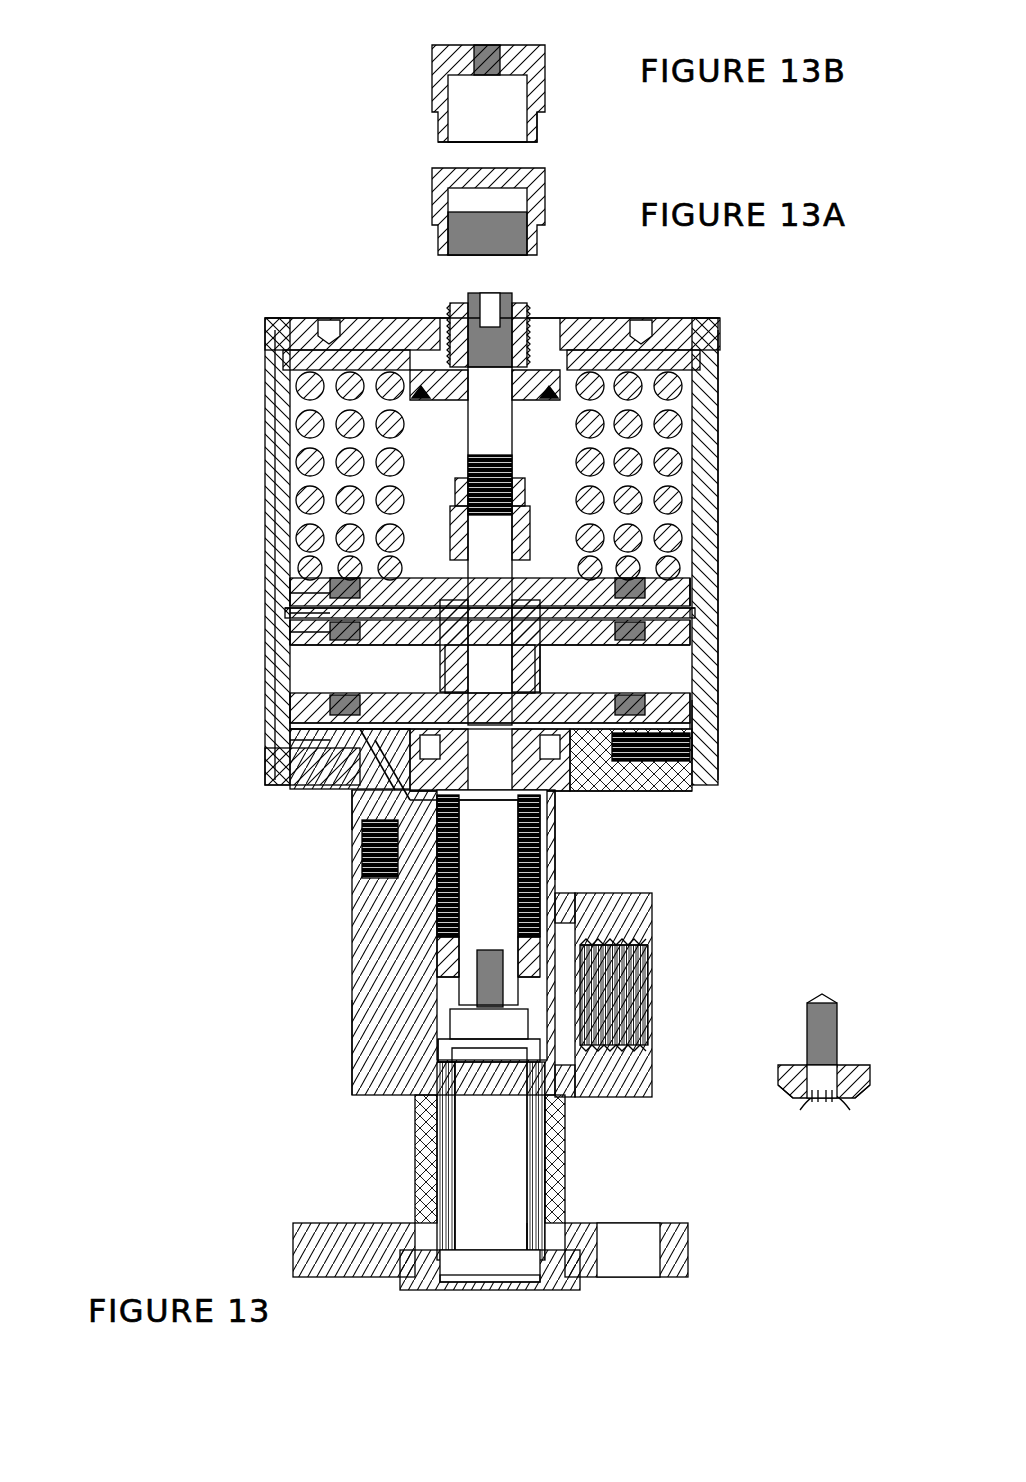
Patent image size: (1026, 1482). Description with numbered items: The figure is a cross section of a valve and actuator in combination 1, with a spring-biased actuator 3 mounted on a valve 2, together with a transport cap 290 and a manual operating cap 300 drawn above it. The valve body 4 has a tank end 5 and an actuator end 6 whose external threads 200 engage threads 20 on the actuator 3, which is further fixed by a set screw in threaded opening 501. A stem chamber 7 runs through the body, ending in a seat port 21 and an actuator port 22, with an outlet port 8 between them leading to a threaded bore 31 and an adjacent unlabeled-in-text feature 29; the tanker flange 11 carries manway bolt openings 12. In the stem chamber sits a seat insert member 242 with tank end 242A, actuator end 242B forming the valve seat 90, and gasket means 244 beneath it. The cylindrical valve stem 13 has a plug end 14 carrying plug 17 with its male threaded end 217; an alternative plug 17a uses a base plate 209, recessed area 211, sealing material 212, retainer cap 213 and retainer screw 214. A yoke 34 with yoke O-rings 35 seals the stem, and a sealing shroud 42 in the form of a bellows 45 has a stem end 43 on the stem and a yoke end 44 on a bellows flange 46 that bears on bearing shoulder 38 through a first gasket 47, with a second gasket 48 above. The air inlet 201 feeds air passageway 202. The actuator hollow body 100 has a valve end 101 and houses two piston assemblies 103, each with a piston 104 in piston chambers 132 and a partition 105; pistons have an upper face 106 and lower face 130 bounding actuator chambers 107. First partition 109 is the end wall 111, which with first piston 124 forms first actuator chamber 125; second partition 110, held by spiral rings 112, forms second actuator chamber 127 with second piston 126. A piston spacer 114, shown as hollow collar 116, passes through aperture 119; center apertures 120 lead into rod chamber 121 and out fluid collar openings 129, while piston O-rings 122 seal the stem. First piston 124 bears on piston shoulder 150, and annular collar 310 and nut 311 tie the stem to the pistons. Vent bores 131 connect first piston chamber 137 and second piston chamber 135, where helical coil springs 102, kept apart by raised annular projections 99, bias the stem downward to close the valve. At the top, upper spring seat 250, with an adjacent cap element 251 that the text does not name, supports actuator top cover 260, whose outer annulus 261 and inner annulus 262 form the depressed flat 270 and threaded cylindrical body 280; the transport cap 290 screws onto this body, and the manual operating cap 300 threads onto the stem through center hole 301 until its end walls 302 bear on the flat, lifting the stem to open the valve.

In FIG. 13, the valve and actuator in combination 1 is at (850, 550).
In FIG. 13, the valve 2 is at (207, 992).
In FIG. 13, the actuator 3 is at (188, 408).
In FIG. 13, the valve body 4 is at (352, 1080).
In FIG. 13, the tank end 5 is at (415, 1138).
In FIG. 13, the actuator end 6 is at (702, 858).
In FIG. 13, the stem chamber 7 is at (491, 1161).
In FIG. 13, the outlet port 8 is at (596, 1045).
In FIG. 13, the tanker flange 11 is at (300, 1225).
In FIG. 13, the manway bolt openings 12 is at (626, 1250).
In FIG. 13, the valve stem 13 is at (488, 902).
In FIG. 13, the plug end 14 is at (491, 959).
In FIG. 13, the plug 17 is at (489, 1035).
In FIG. 13, the plug 17a is at (860, 1000).
In FIG. 13, the threads 20 is at (382, 760).
In FIG. 13, the seat port 21 is at (512, 1228).
In FIG. 13, the actuator port 22 is at (405, 868).
In FIG. 13, the bore 29 is at (652, 952).
In FIG. 13, the threaded bore 31 is at (632, 1010).
In FIG. 13, the yoke 34 is at (722, 896).
In FIG. 13, the yoke O-rings 35 is at (526, 748).
In FIG. 13, the bearing shoulder 38 is at (440, 798).
In FIG. 13, the sealing shroud 42 is at (437, 905).
In FIG. 13, the stem end 43 is at (437, 952).
In FIG. 13, the yoke end 44 is at (542, 808).
In FIG. 13, the bellows 45 is at (311, 866).
In FIG. 13, the bellows flange 46 is at (526, 800).
In FIG. 13, the first gasket 47 is at (455, 828).
In FIG. 13, the second gasket 48 is at (442, 790).
In FIG. 13, the valve seat 90 is at (560, 1068).
In FIG. 13, the raised annular projections 99 is at (692, 592).
In FIG. 13, the hollow body 100 is at (720, 375).
In FIG. 13, the valve end 101 is at (737, 720).
In FIG. 13, the helical coil springs 102 is at (350, 418).
In FIG. 13, the piston assemblies 103 is at (702, 603).
In FIG. 13, the pistons 104 is at (229, 569).
In FIG. 13, the partitions 105 is at (233, 631).
In FIG. 13, the upper face 106 is at (692, 628).
In FIG. 13, the actuator chambers 107 is at (233, 566).
In FIG. 13, the first partition 109 is at (224, 721).
In FIG. 13, the second partition 110 is at (300, 630).
In FIG. 13, the end wall 111 is at (300, 748).
In FIG. 13, the spiral rings 112 is at (692, 658).
In FIG. 13, the piston spacer 114 is at (445, 668).
In FIG. 13, the hollow collar 116 is at (702, 795).
In FIG. 13, the aperture 119 is at (547, 665).
In FIG. 13, the center apertures 120 is at (440, 640).
In FIG. 13, the rod chamber 121 is at (440, 614).
In FIG. 13, the piston O-rings 122 is at (470, 600).
In FIG. 13, the first piston 124 is at (335, 668).
In FIG. 13, the first actuator chamber 125 is at (300, 706).
In FIG. 13, the second piston 126 is at (320, 610).
In FIG. 13, the second actuator chamber 127 is at (335, 588).
In FIG. 13, the fluid collar openings 129 is at (455, 582).
In FIG. 13, the lower face 130 is at (612, 574).
In FIG. 13, the vent bores 131 is at (268, 410).
In FIG. 13, the piston chambers 132 is at (455, 540).
In FIG. 13, the second piston chamber 135 is at (458, 490).
In FIG. 13, the first piston chamber 137 is at (397, 596).
In FIG. 13, the piston shoulder 150 is at (455, 700).
In FIG. 13, the external threads 200 is at (602, 792).
In FIG. 13, the air inlet 201 is at (352, 830).
In FIG. 13, the air passageway 202 is at (362, 748).
In FIG. 13, the base plate 209 is at (872, 1092).
In FIG. 13, the recessed area 211 is at (806, 1062).
In FIG. 13, the sealing material 212 is at (866, 1094).
In FIG. 13, the retainer cap 213 is at (794, 1098).
In FIG. 13, the retainer screw 214 is at (826, 1104).
In FIG. 13, the male threaded end 217 is at (472, 977).
In FIG. 13, the seat insert member 242 is at (525, 1192).
In FIG. 13, the tank end 242A is at (528, 1272).
In FIG. 13, the actuator end 242B is at (453, 1072).
In FIG. 13, the gasket means 244 is at (565, 1262).
In FIG. 13, the upper spring seat 250 is at (705, 355).
In FIG. 13, the inner plate 251 is at (320, 355).
In FIG. 13, the actuator top cover 260 is at (605, 318).
In FIG. 13, the outer annulus 261 is at (350, 318).
In FIG. 13, the inner annulus 262 is at (445, 402).
In FIG. 13, the depressed flat 270 is at (448, 315).
In FIG. 13, the cylindrical body 280 is at (530, 312).
In FIG. 13A, the transport cap 290 is at (432, 183).
In FIG. 13B, the manual operating cap 300 is at (432, 62).
In FIG. 13B, the center hole 301 is at (492, 45).
In FIG. 13B, the end walls 302 is at (537, 132).
In FIG. 13, the annular collar 310 is at (650, 510).
In FIG. 13, the nut 311 is at (650, 465).
In FIG. 13, the threaded opening 501 is at (692, 750).